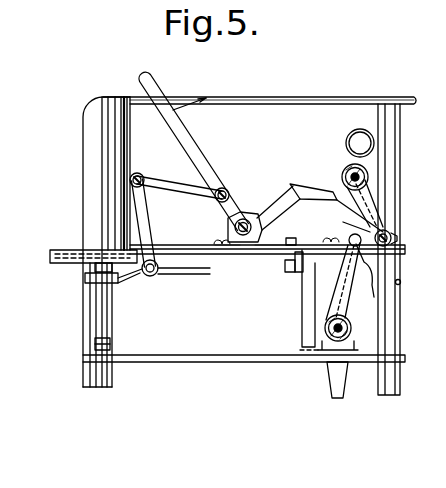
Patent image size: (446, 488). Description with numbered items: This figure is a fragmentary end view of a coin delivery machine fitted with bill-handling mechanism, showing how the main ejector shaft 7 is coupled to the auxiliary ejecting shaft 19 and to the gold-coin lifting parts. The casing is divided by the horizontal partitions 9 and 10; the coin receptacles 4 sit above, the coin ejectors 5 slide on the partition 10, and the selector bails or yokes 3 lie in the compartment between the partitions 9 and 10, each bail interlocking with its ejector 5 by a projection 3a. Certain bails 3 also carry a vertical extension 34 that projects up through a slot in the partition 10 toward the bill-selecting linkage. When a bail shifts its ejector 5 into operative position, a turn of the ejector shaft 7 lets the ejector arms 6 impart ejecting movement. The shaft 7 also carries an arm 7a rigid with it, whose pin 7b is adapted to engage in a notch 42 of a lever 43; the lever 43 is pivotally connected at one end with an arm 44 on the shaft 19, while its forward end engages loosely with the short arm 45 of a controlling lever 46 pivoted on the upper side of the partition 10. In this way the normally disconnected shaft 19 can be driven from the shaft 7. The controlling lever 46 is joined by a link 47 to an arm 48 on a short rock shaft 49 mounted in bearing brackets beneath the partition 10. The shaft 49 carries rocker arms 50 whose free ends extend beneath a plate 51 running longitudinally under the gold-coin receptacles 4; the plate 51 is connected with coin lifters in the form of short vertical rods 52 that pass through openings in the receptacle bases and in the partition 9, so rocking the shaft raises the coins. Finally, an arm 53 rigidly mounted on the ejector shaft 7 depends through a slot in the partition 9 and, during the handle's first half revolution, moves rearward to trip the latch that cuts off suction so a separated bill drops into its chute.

The selector bail 3 is at (245, 254).
The projection 3a is at (304, 268).
The coin receptacle 4 is at (93, 167).
The coin ejector 5 is at (226, 278).
The ejector arm 6 is at (400, 284).
The ejector shaft 7 is at (348, 322).
The arm 7a is at (345, 268).
The pin 7b is at (372, 256).
The horizontal partition 9 is at (248, 358).
The horizontal partition 10 is at (273, 247).
The auxiliary ejecting shaft 19 is at (363, 175).
The vertical extension 34 is at (283, 272).
The notch 42 is at (389, 235).
The lever 43 is at (313, 194).
The arm 44 is at (370, 208).
The short arm 45 is at (277, 210).
The controlling lever 46 is at (202, 152).
The link 47 is at (217, 232).
The arm 48 is at (152, 238).
The short shaft 49 is at (210, 271).
The rocker arm 50 is at (144, 276).
The plate 51 is at (82, 280).
The coin lifter 52 is at (108, 341).
The arm 53 is at (332, 374).